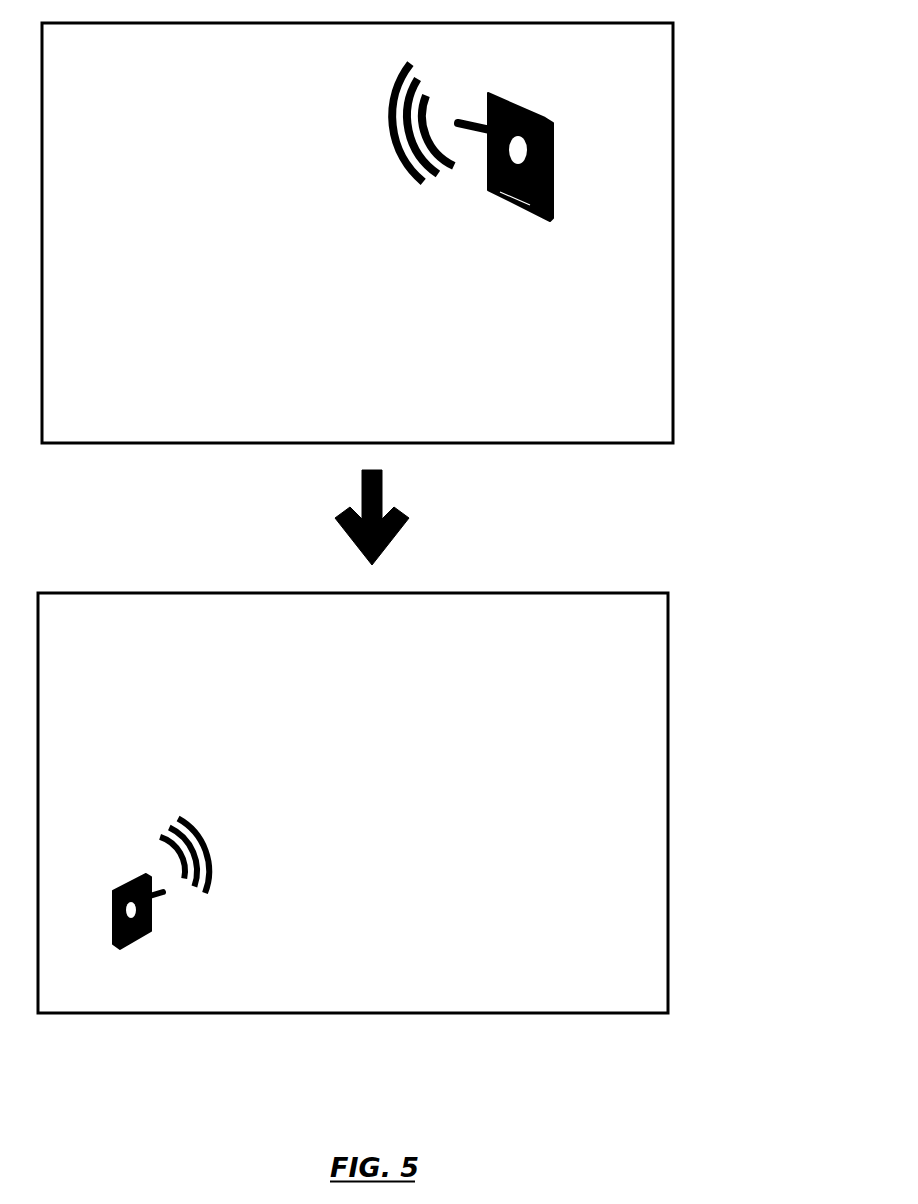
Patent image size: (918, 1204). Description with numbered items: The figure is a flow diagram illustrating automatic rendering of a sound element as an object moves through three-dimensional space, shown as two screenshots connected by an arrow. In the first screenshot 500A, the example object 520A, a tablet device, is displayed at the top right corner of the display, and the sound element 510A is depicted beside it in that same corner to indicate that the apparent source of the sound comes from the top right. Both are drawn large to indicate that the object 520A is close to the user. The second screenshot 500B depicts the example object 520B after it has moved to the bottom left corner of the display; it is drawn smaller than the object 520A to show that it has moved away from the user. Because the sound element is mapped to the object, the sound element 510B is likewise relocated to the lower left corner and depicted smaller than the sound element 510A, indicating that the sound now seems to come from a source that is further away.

The screenshot 500A is at (424, 233).
The sound element 510A is at (359, 119).
The object 520A is at (553, 179).
The screenshot 500B is at (421, 803).
The sound element 510B is at (250, 840).
The object 520B is at (193, 927).